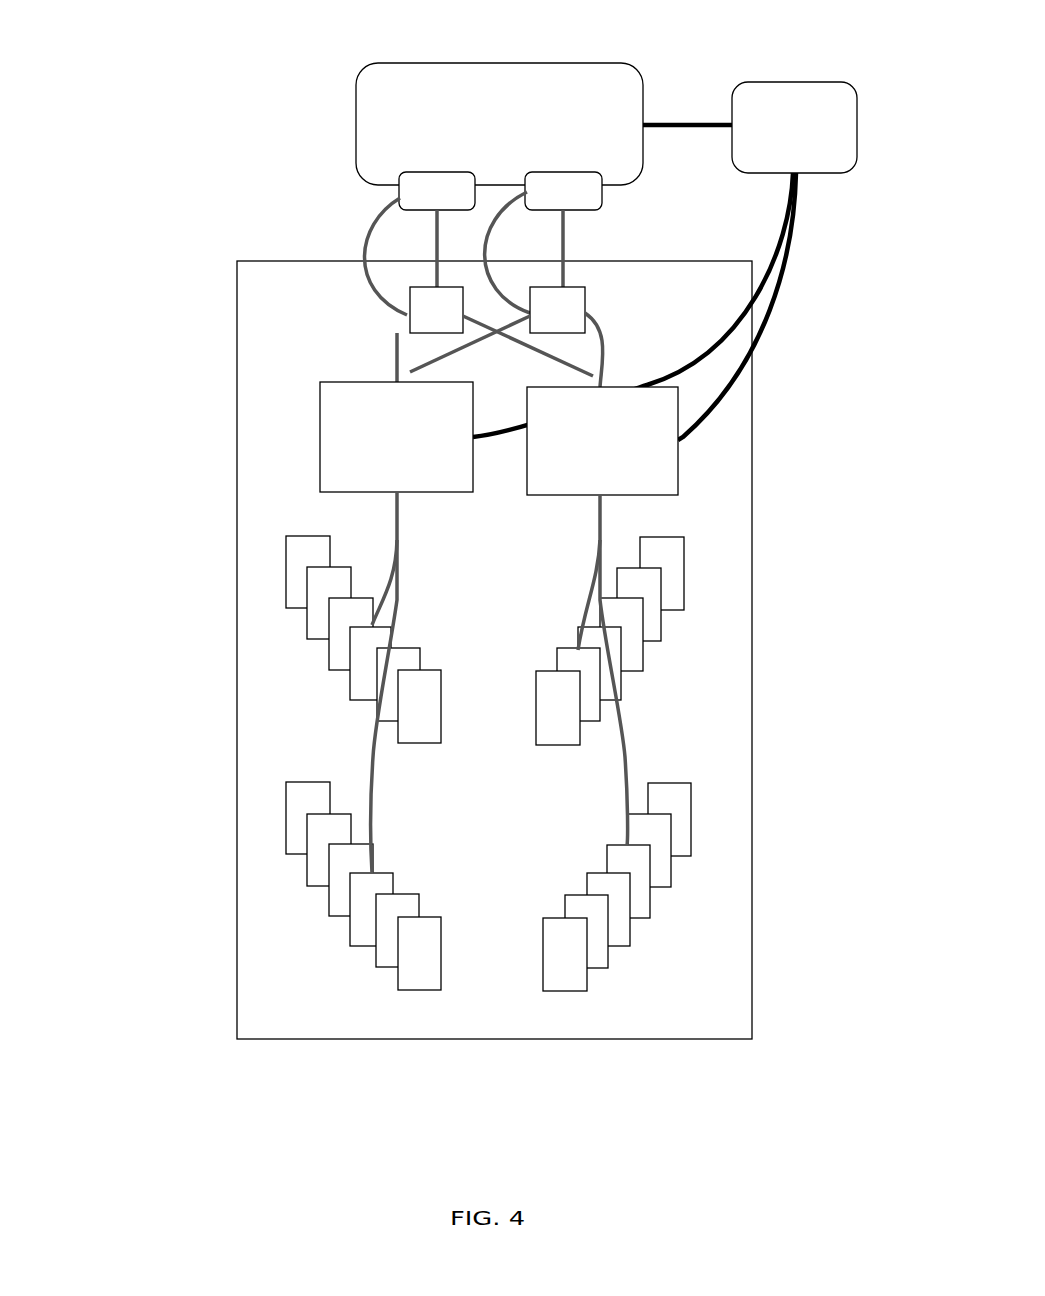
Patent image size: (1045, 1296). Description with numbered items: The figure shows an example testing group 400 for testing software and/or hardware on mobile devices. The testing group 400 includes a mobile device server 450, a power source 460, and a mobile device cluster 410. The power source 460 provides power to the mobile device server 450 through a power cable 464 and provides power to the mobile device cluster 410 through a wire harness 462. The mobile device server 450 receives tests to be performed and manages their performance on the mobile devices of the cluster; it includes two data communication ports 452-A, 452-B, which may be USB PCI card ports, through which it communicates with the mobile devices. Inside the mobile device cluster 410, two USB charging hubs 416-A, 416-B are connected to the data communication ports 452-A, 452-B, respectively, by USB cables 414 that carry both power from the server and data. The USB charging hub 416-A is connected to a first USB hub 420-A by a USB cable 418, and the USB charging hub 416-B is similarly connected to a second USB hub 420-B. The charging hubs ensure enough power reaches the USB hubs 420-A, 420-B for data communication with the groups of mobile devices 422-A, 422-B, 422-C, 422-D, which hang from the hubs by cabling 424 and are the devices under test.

The testing group 400 is at (148, 52).
The mobile device cluster 410 is at (494, 650).
The USB cables 414 is at (360, 285).
The USB charging hub 416-A is at (407, 320).
The USB charging hub 416-B is at (592, 288).
The USB cable 418 is at (382, 352).
The USB hub 420-A is at (396, 437).
The USB hub 420-B is at (602, 440).
The mobile devices 422-A is at (292, 623).
The mobile devices 422-B is at (305, 913).
The mobile devices 422-C is at (688, 627).
The mobile devices 422-D is at (687, 887).
The USB cable 424 is at (383, 508).
The mobile device server 450 is at (499, 124).
The data communication port 452-A is at (402, 217).
The data communication port 452-B is at (603, 203).
The power source 460 is at (794, 127).
The wire harness 462 is at (808, 198).
The power cable 464 is at (675, 108).